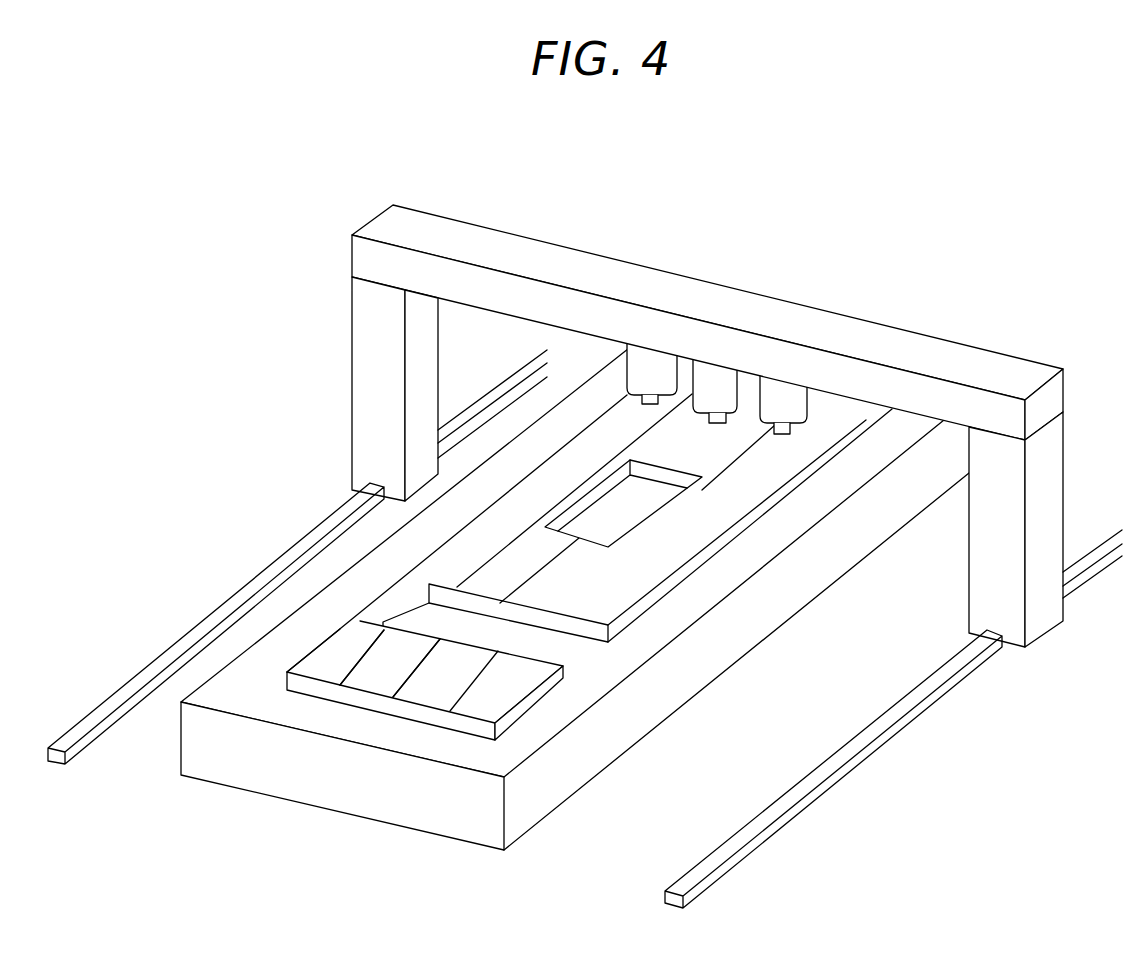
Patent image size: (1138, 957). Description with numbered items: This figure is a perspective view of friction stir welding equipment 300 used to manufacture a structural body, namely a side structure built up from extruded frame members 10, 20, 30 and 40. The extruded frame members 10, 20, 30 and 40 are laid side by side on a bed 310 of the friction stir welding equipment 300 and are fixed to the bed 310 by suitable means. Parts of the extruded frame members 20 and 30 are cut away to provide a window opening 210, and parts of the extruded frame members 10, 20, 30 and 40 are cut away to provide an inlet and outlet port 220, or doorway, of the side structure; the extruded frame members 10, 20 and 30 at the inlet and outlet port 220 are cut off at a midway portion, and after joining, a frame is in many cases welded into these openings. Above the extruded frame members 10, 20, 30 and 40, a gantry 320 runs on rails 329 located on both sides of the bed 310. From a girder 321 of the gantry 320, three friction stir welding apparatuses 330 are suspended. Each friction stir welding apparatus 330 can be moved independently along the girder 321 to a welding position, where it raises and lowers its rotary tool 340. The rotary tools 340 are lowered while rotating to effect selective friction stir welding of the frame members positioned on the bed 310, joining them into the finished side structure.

The extruded frame member 10 is at (485, 707).
The extruded frame member 20 is at (427, 690).
The extruded frame member 30 is at (363, 685).
The extruded frame member 40 is at (317, 668).
The window opening 210 is at (617, 528).
The inlet and outlet port 220 is at (570, 653).
The friction stir welding equipment 300 is at (188, 372).
The bed 310 is at (515, 820).
The gantry 320 is at (350, 257).
The girder 321 is at (543, 257).
The rails 329 is at (787, 798).
The friction stir welding apparatus 330 is at (782, 402).
The rotary tool 340 is at (650, 404).